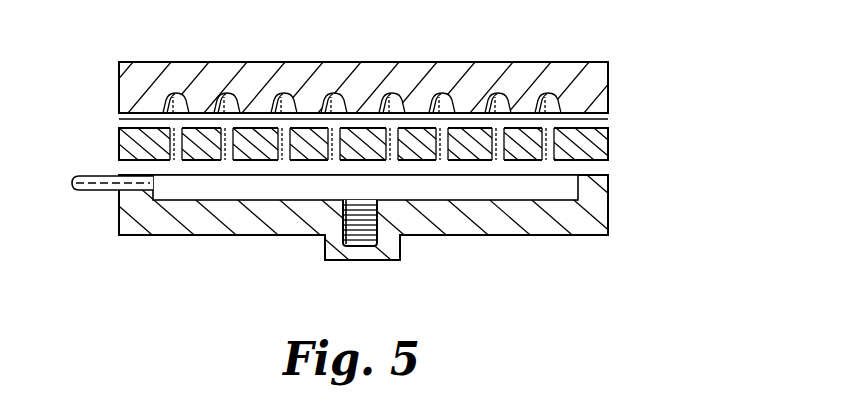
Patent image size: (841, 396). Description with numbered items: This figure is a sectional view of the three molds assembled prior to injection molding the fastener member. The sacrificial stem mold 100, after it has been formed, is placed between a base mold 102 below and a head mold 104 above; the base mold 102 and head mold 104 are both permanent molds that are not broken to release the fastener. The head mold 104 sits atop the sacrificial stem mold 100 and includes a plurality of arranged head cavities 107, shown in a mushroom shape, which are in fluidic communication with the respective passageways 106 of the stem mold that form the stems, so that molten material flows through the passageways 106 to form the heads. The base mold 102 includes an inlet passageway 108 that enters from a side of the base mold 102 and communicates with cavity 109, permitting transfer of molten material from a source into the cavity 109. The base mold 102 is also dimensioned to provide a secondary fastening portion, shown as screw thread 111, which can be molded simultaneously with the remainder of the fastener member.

The sacrificial stem mold 100 is at (650, 139).
The base mold 102 is at (645, 206).
The head mold 104 is at (635, 84).
The passageways 106 is at (178, 128).
The head cavities 107 is at (283, 96).
The inlet passageway 108 is at (92, 192).
The cavity 109 is at (475, 188).
The screw thread 111 is at (373, 238).